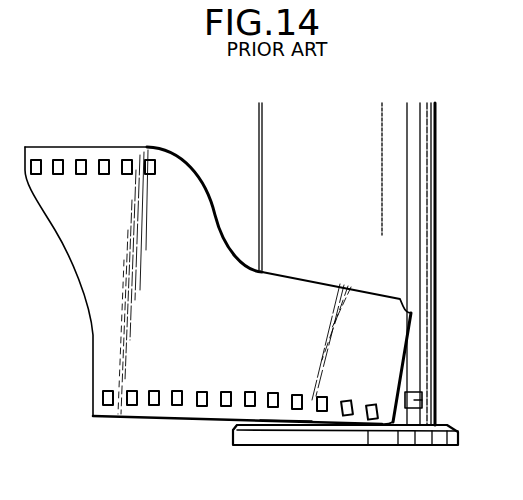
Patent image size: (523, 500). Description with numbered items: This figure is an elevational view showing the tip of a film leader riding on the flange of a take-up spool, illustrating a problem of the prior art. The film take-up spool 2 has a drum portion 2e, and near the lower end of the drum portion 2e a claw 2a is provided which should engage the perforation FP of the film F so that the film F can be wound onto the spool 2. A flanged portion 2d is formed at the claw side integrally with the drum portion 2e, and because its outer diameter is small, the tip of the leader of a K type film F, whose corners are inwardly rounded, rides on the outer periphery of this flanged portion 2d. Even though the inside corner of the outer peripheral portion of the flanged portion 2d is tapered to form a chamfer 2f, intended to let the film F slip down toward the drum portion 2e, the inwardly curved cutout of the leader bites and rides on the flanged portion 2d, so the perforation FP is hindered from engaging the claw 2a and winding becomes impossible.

The film take-up spool 2 is at (446, 190).
The drum portion 2e is at (430, 311).
The claw 2a is at (414, 393).
The chamfer 2f is at (452, 426).
The flanged portion 2d is at (459, 442).
The film F is at (143, 378).
The perforation FP is at (346, 409).